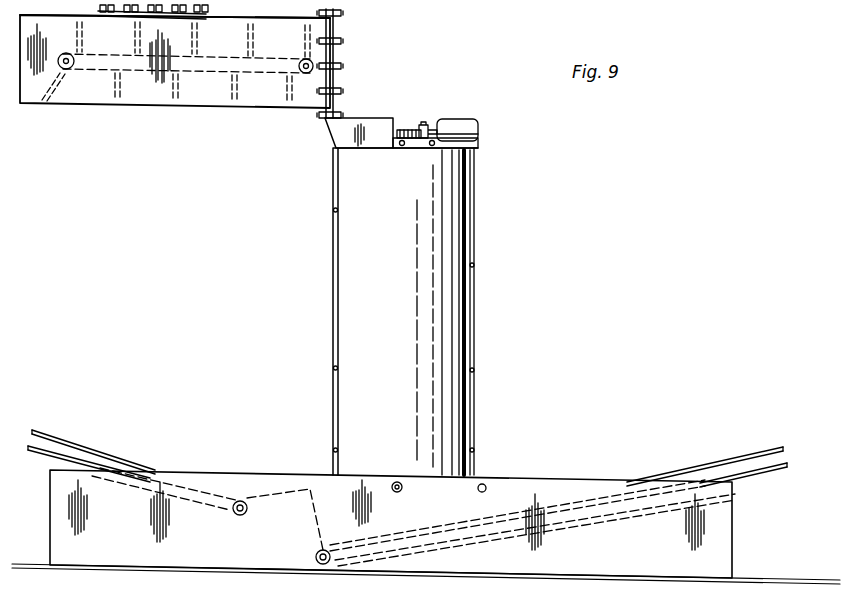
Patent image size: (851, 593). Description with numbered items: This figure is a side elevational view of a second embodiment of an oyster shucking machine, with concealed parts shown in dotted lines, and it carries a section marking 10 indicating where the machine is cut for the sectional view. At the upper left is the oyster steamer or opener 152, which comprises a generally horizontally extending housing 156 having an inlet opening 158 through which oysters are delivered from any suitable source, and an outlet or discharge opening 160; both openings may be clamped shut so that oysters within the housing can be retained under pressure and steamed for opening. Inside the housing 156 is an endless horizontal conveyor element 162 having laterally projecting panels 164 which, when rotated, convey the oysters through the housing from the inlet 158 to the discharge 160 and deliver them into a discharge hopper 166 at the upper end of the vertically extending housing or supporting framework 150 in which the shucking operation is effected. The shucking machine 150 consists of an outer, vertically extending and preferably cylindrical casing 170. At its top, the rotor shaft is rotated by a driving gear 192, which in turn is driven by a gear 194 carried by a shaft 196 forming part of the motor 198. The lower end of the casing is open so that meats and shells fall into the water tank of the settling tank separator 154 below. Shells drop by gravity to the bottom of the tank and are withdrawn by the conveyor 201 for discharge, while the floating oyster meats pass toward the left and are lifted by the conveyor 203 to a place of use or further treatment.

The section line 10- 10 is at (372, 240).
The supporting framework 150 is at (450, 223).
The oyster steamer 152 is at (276, 10).
The settling tank separator 154 is at (536, 478).
The housing 156 is at (163, 101).
The inlet opening 158 is at (137, 19).
The discharge opening 160 is at (337, 51).
The horizontal conveyor element 162 is at (100, 71).
The laterally projecting panels 164 is at (194, 51).
The discharge hopper 166 is at (364, 127).
The cylindrical casing 170 is at (356, 371).
The driving gear 192 is at (403, 128).
The gear 194 is at (424, 124).
The shaft 196 is at (430, 140).
The motor 198 is at (466, 131).
The conveyor 201 is at (688, 470).
The conveyor 203 is at (98, 449).